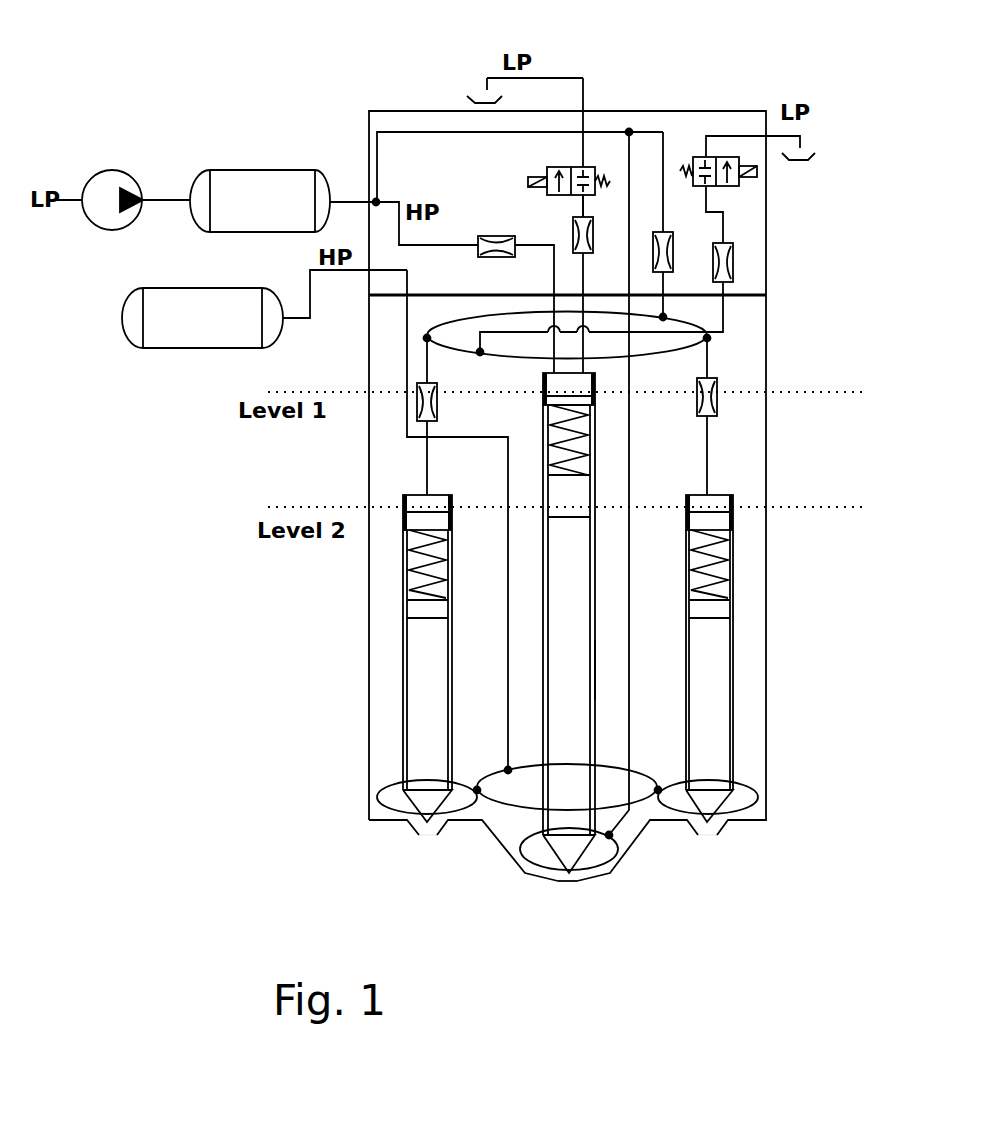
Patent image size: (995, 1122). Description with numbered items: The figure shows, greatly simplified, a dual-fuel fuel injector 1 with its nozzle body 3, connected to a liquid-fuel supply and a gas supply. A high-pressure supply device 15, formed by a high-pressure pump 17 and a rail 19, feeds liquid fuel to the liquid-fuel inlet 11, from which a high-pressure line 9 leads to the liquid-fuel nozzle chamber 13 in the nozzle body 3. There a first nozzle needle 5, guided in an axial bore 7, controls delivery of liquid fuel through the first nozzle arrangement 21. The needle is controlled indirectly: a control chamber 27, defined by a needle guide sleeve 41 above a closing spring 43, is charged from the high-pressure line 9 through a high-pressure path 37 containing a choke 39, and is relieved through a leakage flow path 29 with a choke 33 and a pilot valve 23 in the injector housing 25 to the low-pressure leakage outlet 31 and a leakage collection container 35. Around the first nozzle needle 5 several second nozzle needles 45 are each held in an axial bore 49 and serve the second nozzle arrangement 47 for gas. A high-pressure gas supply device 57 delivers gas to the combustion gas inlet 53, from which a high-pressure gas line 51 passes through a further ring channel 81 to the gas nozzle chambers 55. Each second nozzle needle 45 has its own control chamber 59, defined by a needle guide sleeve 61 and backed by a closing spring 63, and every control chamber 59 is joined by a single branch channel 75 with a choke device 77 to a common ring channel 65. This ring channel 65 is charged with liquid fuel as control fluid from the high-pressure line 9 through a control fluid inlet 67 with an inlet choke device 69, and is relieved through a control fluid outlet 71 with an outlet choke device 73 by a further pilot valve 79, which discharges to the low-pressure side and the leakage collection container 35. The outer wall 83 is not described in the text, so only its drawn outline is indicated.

The dual-fuel fuel injector 1 is at (283, 80).
The nozzle body 3 is at (766, 300).
The first nozzle needle 5 is at (552, 623).
The axial bore 7 is at (595, 686).
The high-pressure line 9 is at (426, 134).
The liquid-fuel inlet 11 is at (365, 195).
The liquid-fuel nozzle chamber 13 is at (540, 849).
The high-pressure supply device 15 is at (189, 181).
The high-pressure pump 17 is at (103, 222).
The rail 19 is at (260, 201).
The first nozzle arrangement 21 is at (572, 883).
The pilot valve 23 is at (512, 181).
The injector housing 25 is at (766, 196).
The control chamber 27 is at (558, 385).
The leakage flow path 29 is at (581, 201).
The leakage outlet 31 is at (592, 106).
The choke 33 is at (593, 242).
The leakage collection container 35 is at (479, 93).
The high-pressure path 37 is at (412, 248).
The choke 39 is at (498, 260).
The needle guide sleeve 41 is at (553, 394).
The closing spring 43 is at (580, 427).
The second nozzle needles 45 is at (568, 676).
The second nozzle arrangement 47 is at (428, 838).
The axial bore 49 is at (563, 632).
The high-pressure gas line 51 is at (308, 283).
The combustion gas inlet 53 is at (363, 280).
The gas nozzle chamber 55 is at (395, 788).
The high-pressure gas supply device 57 is at (202, 318).
The control chamber 59 is at (410, 497).
The needle guide sleeve 61 is at (452, 520).
The closing spring 63 is at (403, 566).
The ring channel 65 is at (700, 352).
The control fluid inlet 67 is at (665, 149).
The inlet choke device 69 is at (680, 259).
The control fluid outlet 71 is at (724, 311).
The outlet choke device 73 is at (740, 263).
The branch channel 75 is at (430, 479).
The choke device 77 is at (441, 389).
The pilot valve 79 is at (735, 196).
The ring channel 81 is at (503, 809).
The housing wall 83 is at (368, 706).